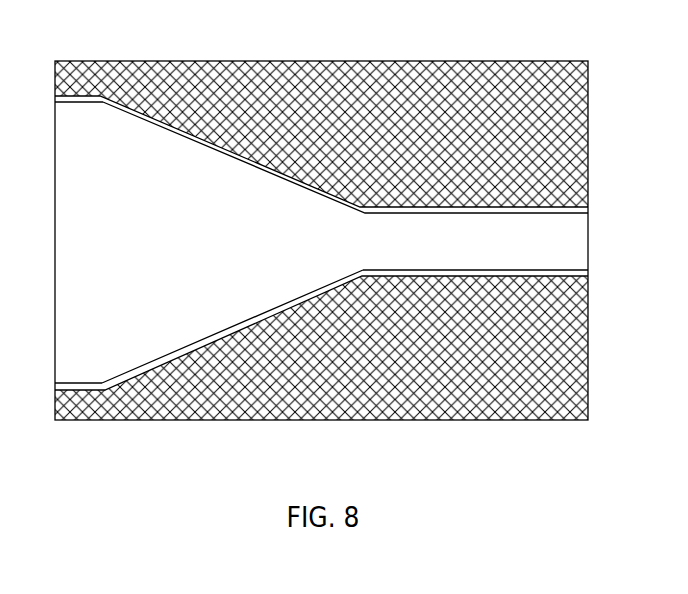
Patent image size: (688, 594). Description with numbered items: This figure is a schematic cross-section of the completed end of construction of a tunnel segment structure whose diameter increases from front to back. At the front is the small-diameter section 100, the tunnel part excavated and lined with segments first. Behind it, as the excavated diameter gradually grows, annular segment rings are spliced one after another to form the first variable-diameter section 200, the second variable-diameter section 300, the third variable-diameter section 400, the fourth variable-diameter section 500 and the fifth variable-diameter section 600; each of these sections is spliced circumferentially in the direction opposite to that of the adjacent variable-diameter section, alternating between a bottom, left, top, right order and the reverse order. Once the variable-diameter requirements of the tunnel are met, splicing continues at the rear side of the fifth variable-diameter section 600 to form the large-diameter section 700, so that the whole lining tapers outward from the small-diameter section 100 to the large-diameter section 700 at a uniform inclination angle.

The small-diameter section 100 is at (438, 274).
The first variable-diameter section 200 is at (293, 177).
The second variable-diameter section 300 is at (347, 272).
The third variable-diameter section 400 is at (182, 131).
The fourth variable-diameter section 500 is at (235, 327).
The fifth variable-diameter section 600 is at (121, 385).
The large-diameter section 700 is at (71, 96).